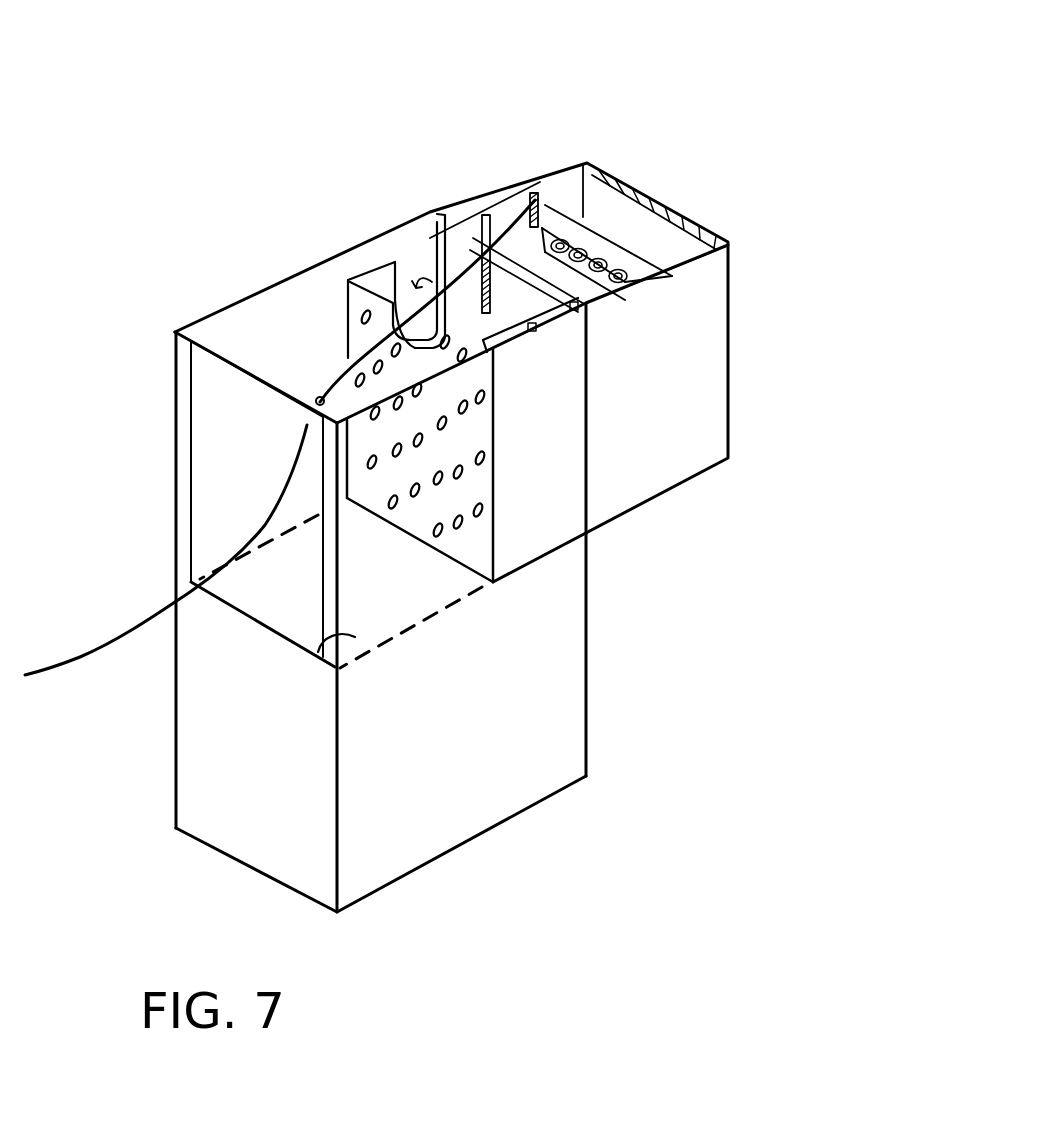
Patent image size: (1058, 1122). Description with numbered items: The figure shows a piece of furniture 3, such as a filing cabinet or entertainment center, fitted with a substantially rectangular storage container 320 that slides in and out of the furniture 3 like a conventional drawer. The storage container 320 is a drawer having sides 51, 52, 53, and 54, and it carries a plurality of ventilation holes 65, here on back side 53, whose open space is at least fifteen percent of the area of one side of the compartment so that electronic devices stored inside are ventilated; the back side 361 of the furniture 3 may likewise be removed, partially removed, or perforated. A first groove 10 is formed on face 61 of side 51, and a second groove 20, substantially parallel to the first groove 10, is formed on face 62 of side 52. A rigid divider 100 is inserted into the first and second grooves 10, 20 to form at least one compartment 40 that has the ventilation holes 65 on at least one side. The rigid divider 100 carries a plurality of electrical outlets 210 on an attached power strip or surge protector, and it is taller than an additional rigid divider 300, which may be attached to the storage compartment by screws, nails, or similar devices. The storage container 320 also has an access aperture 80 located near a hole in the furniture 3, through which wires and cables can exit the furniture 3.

The piece of furniture 3 is at (203, 153).
The first groove 10 is at (540, 195).
The second groove 20 is at (676, 256).
The compartment 40 is at (521, 223).
The side 51 is at (367, 265).
The side 52 is at (600, 507).
The back side 53 is at (477, 553).
The side 54 is at (668, 254).
The face 61 is at (435, 232).
The face 62 is at (319, 395).
The ventilation holes 65 is at (480, 508).
The access aperture 80 is at (400, 340).
The rigid divider 100 is at (600, 209).
The electrical outlets 210 is at (565, 172).
The additional rigid divider 300 is at (530, 321).
The substantially rectangular storage container 320 is at (772, 443).
The back side of furniture 361 is at (355, 637).